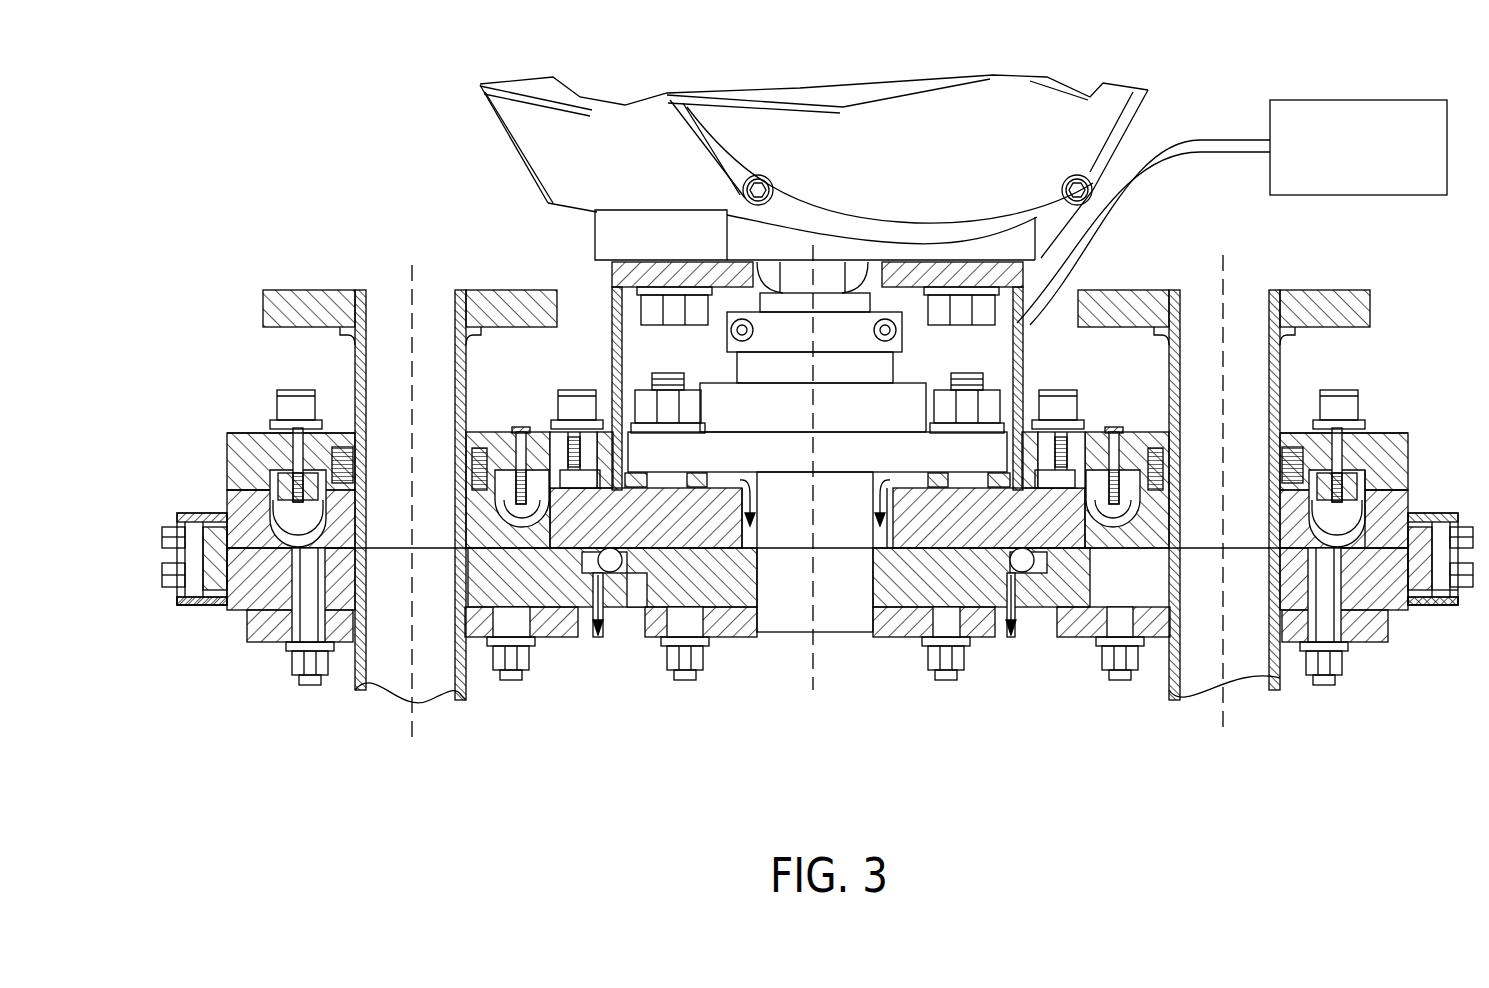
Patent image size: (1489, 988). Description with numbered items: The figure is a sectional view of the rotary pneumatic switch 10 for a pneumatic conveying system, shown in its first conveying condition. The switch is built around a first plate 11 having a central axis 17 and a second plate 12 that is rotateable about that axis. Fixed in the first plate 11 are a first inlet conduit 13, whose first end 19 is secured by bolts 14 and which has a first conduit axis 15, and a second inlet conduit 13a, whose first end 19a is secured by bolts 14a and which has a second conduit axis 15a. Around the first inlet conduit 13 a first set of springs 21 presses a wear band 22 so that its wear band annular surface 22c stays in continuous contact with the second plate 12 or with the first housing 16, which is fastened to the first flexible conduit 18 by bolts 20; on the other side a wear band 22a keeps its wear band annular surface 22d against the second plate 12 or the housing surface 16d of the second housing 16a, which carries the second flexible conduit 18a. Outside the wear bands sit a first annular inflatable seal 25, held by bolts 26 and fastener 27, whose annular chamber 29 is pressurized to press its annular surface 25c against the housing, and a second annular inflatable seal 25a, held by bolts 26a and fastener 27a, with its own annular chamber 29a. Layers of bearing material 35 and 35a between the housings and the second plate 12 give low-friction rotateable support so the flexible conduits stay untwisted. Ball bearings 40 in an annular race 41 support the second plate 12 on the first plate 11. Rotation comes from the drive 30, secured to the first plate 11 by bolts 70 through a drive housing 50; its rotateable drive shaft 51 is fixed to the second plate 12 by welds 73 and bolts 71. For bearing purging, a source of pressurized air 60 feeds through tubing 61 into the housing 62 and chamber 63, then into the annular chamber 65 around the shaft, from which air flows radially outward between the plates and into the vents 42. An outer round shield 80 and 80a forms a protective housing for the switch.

The pneumatic switch 10 is at (1162, 66).
The drive 30 is at (925, 100).
The source of pressurized air or gas 60 is at (1370, 100).
The tubing 61 is at (1130, 197).
The housing 62 is at (1020, 360).
The chamber 63 is at (1000, 320).
The bolts 70 is at (707, 342).
The drive housing 50 is at (812, 400).
The rotateable drive shaft 51 is at (780, 591).
The annular chamber 65 is at (880, 540).
The first plate 11 is at (230, 502).
The second plate 12 is at (995, 600).
The first inlet conduit 13 is at (1283, 292).
The second inlet conduit 13a is at (466, 292).
The first conduit axis 15 is at (1225, 268).
The second conduit axis 15a is at (412, 270).
The bolts 14 is at (1065, 405).
The bolts 14a is at (283, 398).
The first housing 16 is at (1330, 650).
The second housing 16a is at (252, 620).
The housing surface 16d is at (310, 684).
The central axis 17 is at (815, 660).
The first flexible conduit 18 is at (1278, 690).
The second flexible conduit 18a is at (362, 688).
The first end 19 is at (1272, 487).
The first end 19a is at (460, 542).
The bolts 20 is at (1122, 672).
The first set of springs 21 is at (1292, 432).
The wear band 22 is at (1290, 530).
The wear band 22a is at (270, 445).
The wear band annular surface 22c is at (1285, 558).
The wear band annular surface 22d is at (480, 640).
The first annular inflatable seal 25 is at (1400, 470).
The second annular inflatable seal 25a is at (300, 630).
The annular surface 25c is at (1390, 625).
The bolts 26 is at (1112, 440).
The bolts 26a is at (300, 455).
The fastener 27 is at (1380, 448).
The fastener 27a is at (272, 470).
The annular chamber 29 is at (1330, 522).
The annular chamber 29a is at (312, 535).
The bearing material 35 is at (1385, 620).
The bearing material 35a is at (243, 613).
The ball bearings 40 is at (612, 565).
The annular race 41 is at (640, 607).
The vents 42 is at (595, 620).
The bolts 71 is at (700, 658).
The welds 73 is at (757, 634).
The outer round shield 80 is at (1455, 522).
The outer round shield 80a is at (1450, 600).